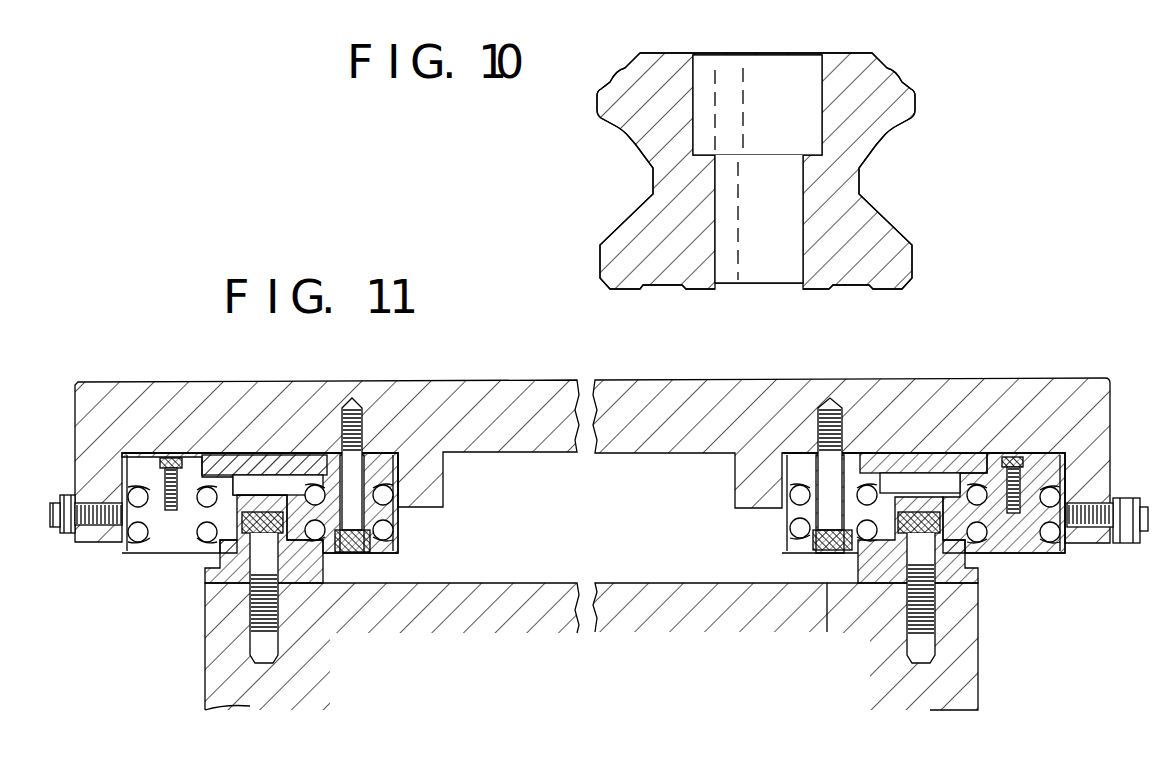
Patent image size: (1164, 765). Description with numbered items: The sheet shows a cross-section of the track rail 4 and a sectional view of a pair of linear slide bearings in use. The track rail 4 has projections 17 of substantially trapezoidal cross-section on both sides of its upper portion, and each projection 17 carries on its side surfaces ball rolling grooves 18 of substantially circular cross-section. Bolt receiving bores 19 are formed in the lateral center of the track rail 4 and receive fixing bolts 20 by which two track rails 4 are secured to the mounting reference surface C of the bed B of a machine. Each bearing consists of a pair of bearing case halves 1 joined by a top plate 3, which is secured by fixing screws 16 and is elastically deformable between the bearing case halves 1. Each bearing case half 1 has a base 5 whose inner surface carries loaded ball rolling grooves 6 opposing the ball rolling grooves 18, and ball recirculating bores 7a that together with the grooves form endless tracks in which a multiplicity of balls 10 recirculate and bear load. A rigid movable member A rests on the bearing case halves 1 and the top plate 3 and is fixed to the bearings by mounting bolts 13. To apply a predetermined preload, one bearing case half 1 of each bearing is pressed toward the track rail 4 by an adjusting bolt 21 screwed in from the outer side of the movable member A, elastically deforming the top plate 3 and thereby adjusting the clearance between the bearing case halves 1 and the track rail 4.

In FIG. 11, the bearing case halves 1 is at (178, 566).
In FIG. 11, the top plate 3 is at (285, 455).
In FIG. 10, the track rail 4 is at (842, 50).
In FIG. 11, the track rail 4 is at (297, 593).
In FIG. 11, the base 5 is at (150, 550).
In FIG. 11, the loaded ball rolling grooves 6 is at (205, 487).
In FIG. 11, the ball recirculating bores 7a is at (138, 500).
In FIG. 11, the balls 10 is at (138, 497).
In FIG. 11, the mounting bolt 13 is at (352, 427).
In FIG. 11, the fixing screws 16 is at (168, 462).
In FIG. 10, the projections 17 is at (598, 105).
In FIG. 10, the ball rolling grooves 18 is at (618, 72).
In FIG. 11, the ball rolling grooves 18 is at (230, 507).
In FIG. 10, the bolt receiving bores 19 is at (780, 262).
In FIG. 11, the bolt receiving bores 19 is at (237, 583).
In FIG. 11, the fixing bolts 20 is at (263, 630).
In FIG. 11, the adjusting bolt 21 is at (53, 525).
In FIG. 11, the movable member A is at (947, 392).
In FIG. 11, the bed B is at (980, 690).
In FIG. 11, the mounting reference surface C is at (675, 583).